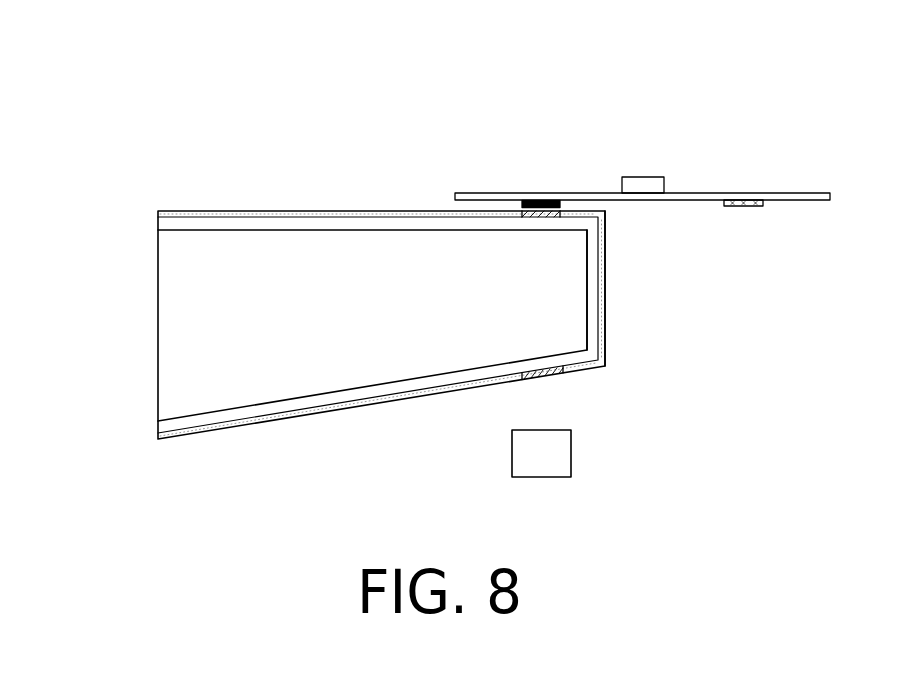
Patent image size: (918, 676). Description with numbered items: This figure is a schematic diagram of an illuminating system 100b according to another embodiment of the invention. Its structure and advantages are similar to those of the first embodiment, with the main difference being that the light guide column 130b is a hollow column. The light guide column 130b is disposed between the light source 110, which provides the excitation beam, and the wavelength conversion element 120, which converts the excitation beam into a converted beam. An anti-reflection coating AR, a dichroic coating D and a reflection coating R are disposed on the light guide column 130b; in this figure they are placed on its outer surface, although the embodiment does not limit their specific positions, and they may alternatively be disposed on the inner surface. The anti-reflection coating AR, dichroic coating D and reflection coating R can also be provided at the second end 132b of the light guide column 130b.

The illuminating system 100b is at (107, 43).
The light guide column 130b is at (156, 226).
The second end 132b is at (587, 281).
The reflection coating R is at (237, 210).
The anti-reflection coating AR is at (548, 207).
The dichroic coating D is at (552, 380).
The wavelength conversion element 120 is at (806, 166).
The light source 110 is at (555, 450).